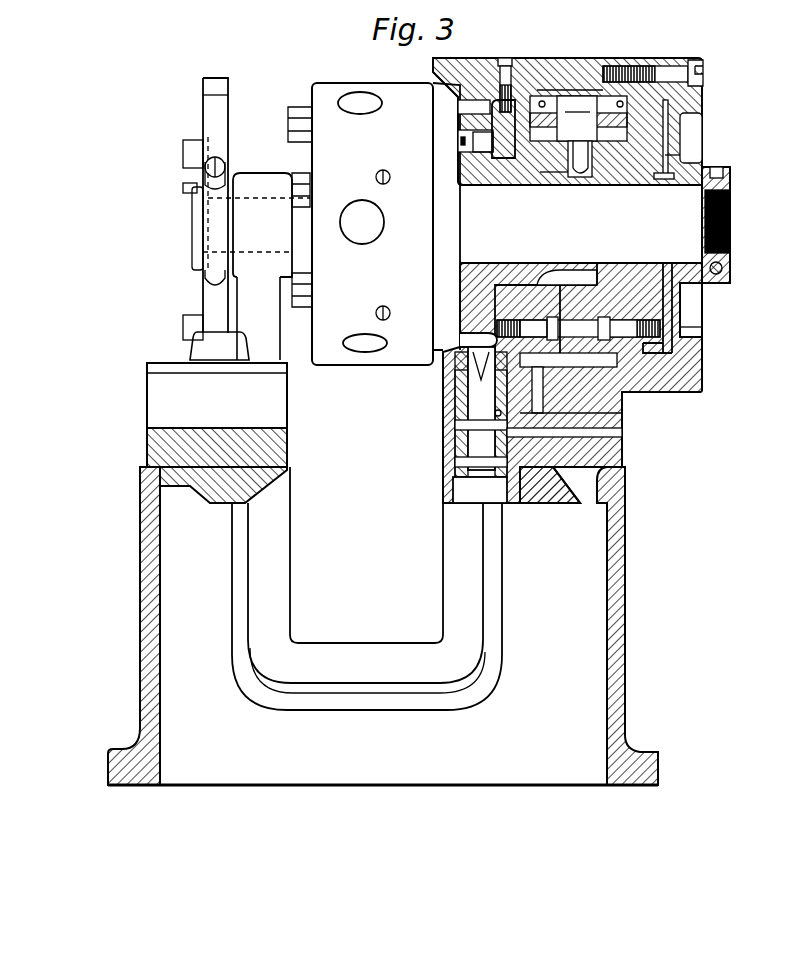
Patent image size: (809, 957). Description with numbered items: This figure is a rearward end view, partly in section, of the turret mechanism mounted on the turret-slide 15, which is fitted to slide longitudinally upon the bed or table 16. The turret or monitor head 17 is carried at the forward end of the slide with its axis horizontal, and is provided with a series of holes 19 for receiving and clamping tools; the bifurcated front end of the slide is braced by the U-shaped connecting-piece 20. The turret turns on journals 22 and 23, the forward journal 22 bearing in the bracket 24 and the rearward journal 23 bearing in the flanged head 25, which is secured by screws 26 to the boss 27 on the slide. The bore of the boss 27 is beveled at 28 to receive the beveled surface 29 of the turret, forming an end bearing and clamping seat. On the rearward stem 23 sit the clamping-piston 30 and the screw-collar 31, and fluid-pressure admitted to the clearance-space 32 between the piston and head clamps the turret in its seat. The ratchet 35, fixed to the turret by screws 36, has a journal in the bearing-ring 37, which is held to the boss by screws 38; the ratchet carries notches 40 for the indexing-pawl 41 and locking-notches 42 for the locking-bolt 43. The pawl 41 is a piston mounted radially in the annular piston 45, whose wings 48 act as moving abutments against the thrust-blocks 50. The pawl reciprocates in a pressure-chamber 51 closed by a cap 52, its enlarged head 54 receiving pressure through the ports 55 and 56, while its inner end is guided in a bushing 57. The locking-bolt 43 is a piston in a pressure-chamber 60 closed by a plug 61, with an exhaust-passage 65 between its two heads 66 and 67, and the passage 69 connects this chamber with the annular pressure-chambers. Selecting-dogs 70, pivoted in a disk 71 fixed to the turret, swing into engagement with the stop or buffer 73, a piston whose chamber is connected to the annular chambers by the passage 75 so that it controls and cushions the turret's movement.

The turret-slide 15 is at (147, 448).
The bed or table 16 is at (140, 615).
The turret or monitor head 17 is at (328, 88).
The holes 19 is at (358, 333).
The U-shaped connecting-piece 20 is at (363, 655).
The journal 22 is at (258, 180).
The journal or stem 23 is at (581, 224).
The bracket 24 is at (262, 350).
The flanged head 25 is at (703, 92).
The screws 26 is at (706, 64).
The boss 27 is at (572, 62).
The beveled seat 28 is at (450, 90).
The beveled surface 29 is at (445, 251).
The clamping-piston 30 is at (683, 328).
The screw-collar 31 is at (730, 185).
The clearance-space 32 is at (683, 155).
The ratchet 35 is at (535, 282).
The screws 36 is at (465, 147).
The bearing-ring 37 is at (508, 297).
The screws 38 is at (505, 60).
The notches 40 is at (583, 280).
The indexing-pawl 41 is at (582, 180).
The locking-notches 42 is at (480, 340).
The locking-bolt 43 is at (475, 393).
The annular piston 45 is at (703, 362).
The wings 48 is at (513, 92).
The thrust-blocks 50 is at (535, 300).
The pressure-chamber 51 is at (587, 100).
The cap 52 is at (558, 92).
The enlarged head 54 is at (577, 118).
The port 55 is at (630, 66).
The port 56 is at (683, 136).
The bushing 57 is at (588, 147).
The pressure-chamber 60 is at (465, 447).
The plug 61 is at (462, 493).
The exhaust-passage 65 is at (620, 433).
The head 66 is at (465, 425).
The head 67 is at (465, 460).
The passage 69 is at (495, 413).
The selecting-dogs 70 is at (188, 140).
The disk 71 is at (215, 208).
The stop or buffer 73 is at (212, 298).
The passage 75 is at (381, 700).